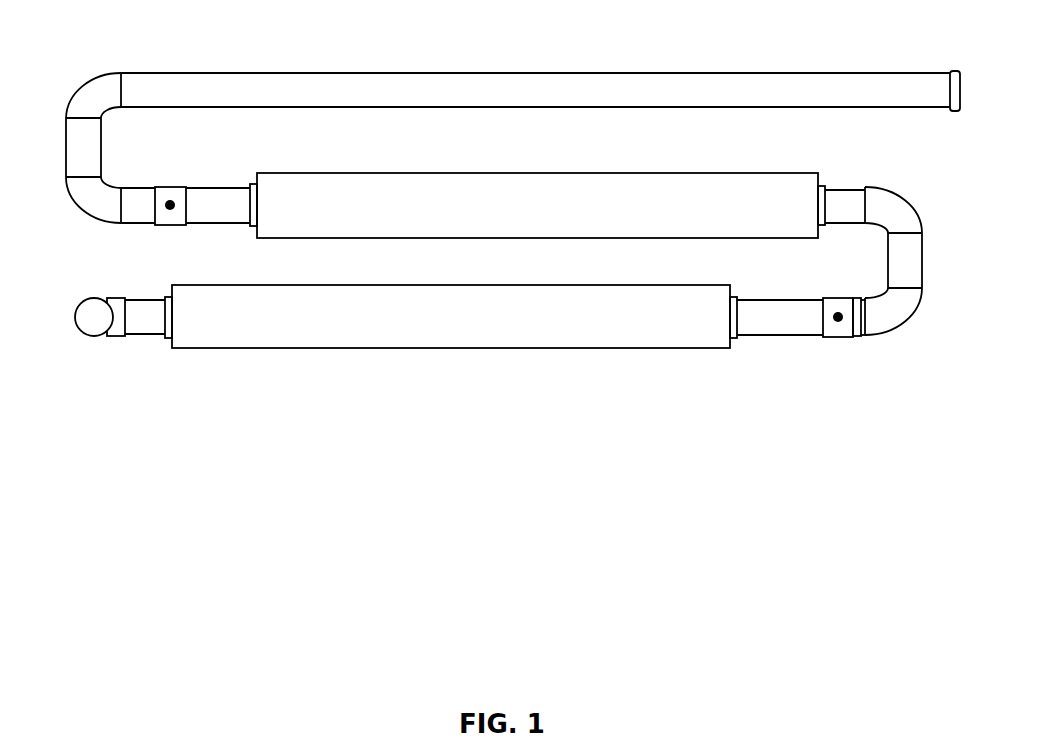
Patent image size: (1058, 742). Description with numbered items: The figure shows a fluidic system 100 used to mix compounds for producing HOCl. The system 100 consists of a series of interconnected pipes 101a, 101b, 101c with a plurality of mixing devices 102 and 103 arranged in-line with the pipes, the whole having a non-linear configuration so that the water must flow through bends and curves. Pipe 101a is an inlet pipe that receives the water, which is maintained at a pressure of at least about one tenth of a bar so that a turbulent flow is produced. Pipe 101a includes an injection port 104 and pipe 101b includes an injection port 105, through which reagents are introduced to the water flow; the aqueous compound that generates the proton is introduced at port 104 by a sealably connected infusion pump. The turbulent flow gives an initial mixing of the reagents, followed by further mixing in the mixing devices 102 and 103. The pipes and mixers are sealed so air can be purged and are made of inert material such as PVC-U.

The fluidic system 100 is at (65, 50).
The inlet pipe 101a is at (360, 72).
The pipe 101b is at (918, 202).
The pipe 101c is at (113, 340).
The mixing device 102 is at (405, 173).
The mixing device 103 is at (408, 350).
The injection port 104 is at (170, 187).
The injection port 105 is at (840, 339).